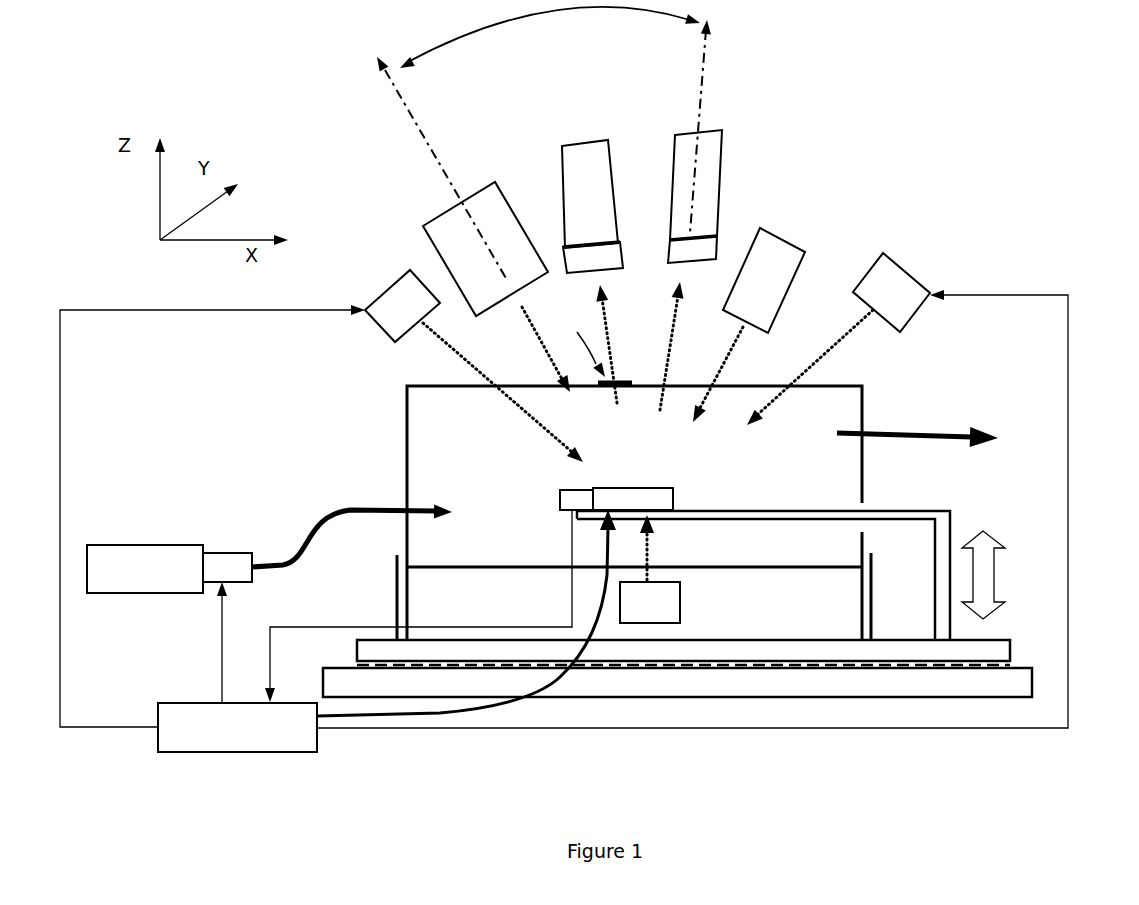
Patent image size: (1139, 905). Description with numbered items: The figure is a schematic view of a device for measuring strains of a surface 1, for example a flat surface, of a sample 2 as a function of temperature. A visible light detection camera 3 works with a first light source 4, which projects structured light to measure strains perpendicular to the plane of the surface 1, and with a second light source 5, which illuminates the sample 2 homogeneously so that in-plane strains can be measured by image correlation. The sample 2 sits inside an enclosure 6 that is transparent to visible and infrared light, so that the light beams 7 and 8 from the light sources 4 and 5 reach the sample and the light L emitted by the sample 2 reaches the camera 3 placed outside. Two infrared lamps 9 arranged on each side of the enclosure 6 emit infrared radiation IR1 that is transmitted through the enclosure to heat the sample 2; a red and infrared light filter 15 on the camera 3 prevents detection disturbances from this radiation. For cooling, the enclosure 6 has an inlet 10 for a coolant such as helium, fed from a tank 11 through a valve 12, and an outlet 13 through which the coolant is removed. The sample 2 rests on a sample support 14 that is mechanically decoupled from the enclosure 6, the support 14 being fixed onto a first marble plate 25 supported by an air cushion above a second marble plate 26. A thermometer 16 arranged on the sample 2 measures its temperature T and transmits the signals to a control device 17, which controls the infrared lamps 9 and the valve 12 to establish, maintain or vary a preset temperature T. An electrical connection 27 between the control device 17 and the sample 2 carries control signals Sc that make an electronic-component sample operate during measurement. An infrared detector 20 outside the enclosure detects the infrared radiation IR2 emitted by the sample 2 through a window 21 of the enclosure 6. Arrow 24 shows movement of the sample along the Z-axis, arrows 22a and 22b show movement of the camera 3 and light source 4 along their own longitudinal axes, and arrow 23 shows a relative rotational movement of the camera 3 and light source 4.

The surface 1 is at (650, 488).
The sample 2 is at (647, 502).
The visible light detection camera 3 is at (720, 136).
The first light source 4 is at (447, 227).
The second light source 5 is at (768, 250).
The enclosure 6 is at (863, 402).
The light beam 7 is at (543, 343).
The light beam 8 is at (730, 355).
The infrared lamps 9 is at (387, 293).
The inlet 10 is at (391, 529).
The tank 11 is at (103, 585).
The valve 12 is at (237, 573).
The outlet 13 is at (882, 450).
The sample support 14 is at (953, 518).
The red and infrared light filter 15 is at (700, 247).
The thermometer 16 is at (560, 490).
The control device 17 is at (317, 743).
The infrared detector 20 is at (566, 160).
The window 21 is at (599, 346).
The arrow 22a is at (703, 82).
The arrow 22b is at (412, 118).
The arrow 23 is at (565, 15).
The arrow 24 is at (997, 562).
The first marble plate 25 is at (1003, 653).
The second marble plate 26 is at (1022, 682).
The electrical connection 27 is at (507, 707).
The infrared radiation IR1 is at (438, 340).
The infrared radiation IR2 is at (612, 348).
The light L is at (670, 347).
The control signals Sc is at (587, 540).
The temperature T is at (418, 606).